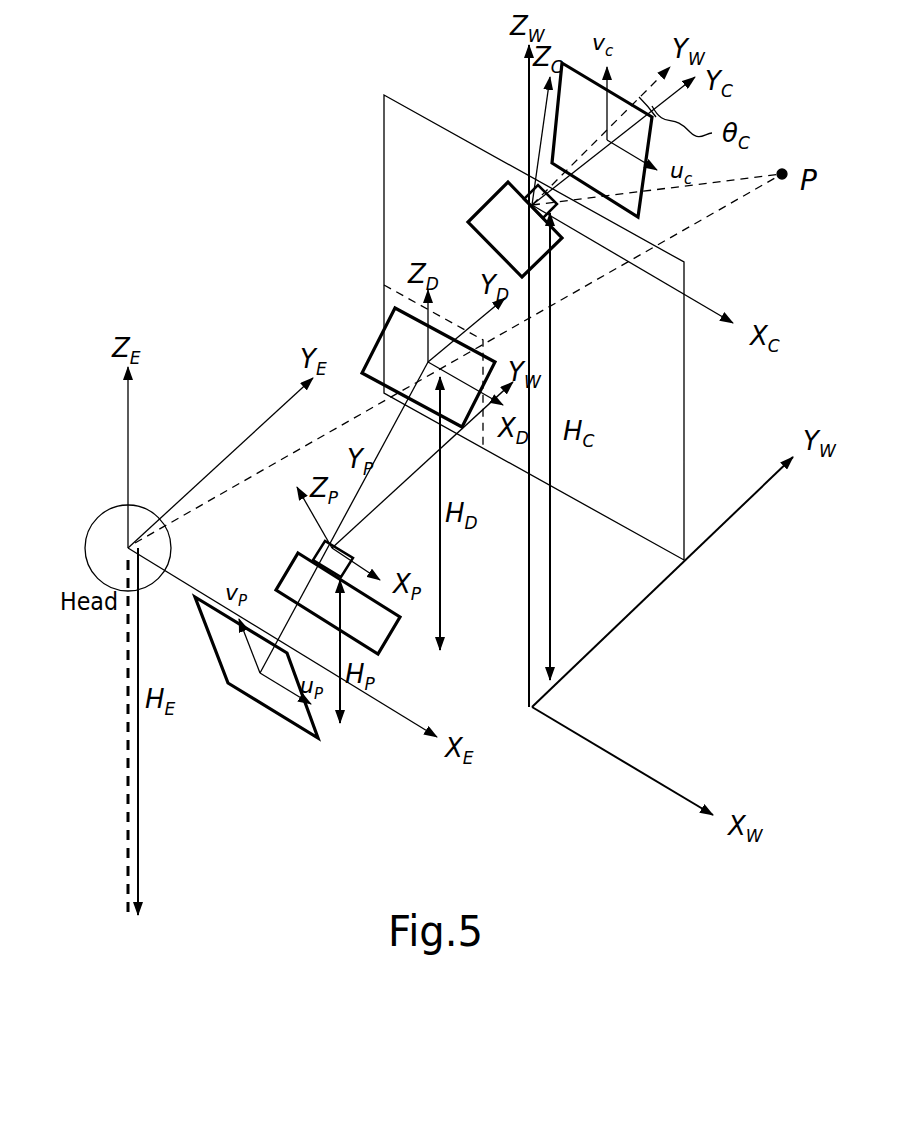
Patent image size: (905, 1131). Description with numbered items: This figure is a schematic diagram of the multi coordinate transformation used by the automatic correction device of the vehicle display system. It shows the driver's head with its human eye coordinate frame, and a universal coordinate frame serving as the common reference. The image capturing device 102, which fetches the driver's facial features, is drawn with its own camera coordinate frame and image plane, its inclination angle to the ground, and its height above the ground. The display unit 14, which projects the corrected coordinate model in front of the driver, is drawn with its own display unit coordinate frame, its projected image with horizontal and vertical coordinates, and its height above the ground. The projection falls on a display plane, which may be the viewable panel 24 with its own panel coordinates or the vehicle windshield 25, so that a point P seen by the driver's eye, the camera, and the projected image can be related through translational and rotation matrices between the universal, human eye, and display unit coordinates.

The image capturing device 102 is at (473, 207).
The vehicle windshield 25 is at (385, 260).
The viewable panel 24 is at (380, 340).
The display unit 14 is at (390, 630).